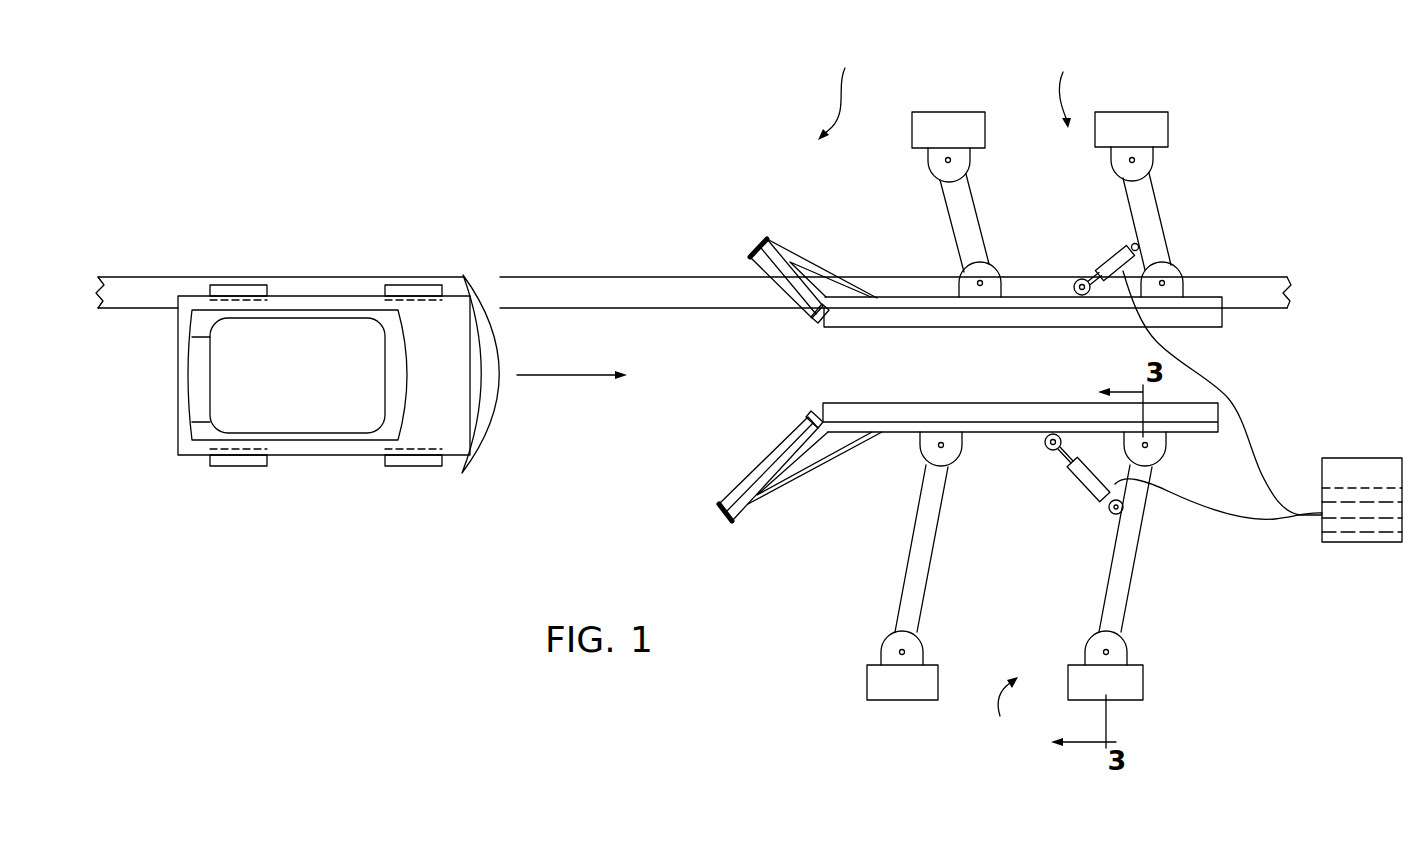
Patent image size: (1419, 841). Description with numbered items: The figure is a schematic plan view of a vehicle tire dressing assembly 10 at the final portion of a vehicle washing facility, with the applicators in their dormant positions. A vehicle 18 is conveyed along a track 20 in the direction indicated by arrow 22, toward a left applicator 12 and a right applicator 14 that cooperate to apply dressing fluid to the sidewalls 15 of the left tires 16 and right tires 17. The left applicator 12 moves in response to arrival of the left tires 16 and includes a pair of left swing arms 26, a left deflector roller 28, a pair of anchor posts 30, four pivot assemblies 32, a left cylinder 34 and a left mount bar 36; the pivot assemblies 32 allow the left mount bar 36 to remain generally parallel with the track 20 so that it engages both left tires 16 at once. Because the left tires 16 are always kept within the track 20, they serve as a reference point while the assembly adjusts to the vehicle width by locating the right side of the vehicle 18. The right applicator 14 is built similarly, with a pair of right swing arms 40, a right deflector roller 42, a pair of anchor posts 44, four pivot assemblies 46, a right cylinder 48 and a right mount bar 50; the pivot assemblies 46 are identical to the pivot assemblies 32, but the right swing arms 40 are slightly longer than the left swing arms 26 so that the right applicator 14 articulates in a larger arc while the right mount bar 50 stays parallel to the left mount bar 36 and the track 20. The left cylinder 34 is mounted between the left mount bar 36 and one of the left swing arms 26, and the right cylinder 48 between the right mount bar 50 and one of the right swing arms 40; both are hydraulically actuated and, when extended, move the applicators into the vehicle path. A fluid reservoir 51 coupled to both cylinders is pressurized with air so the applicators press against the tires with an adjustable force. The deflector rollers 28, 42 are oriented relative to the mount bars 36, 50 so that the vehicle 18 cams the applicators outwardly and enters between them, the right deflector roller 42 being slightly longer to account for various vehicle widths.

The vehicle tire dressing assembly 10 is at (840, 90).
The left applicator 12 is at (1070, 86).
The right applicator 14 is at (1002, 710).
The sidewalls 15 is at (250, 284).
The left tires 16 is at (226, 285).
The right tires 17 is at (223, 467).
The vehicle 18 is at (326, 334).
The track 20 is at (669, 278).
The arrow 22 is at (570, 376).
The left swing arms 26 is at (972, 225).
The left deflector roller 28 is at (786, 280).
The anchor posts 30 is at (968, 120).
The pivot assemblies 32 is at (951, 160).
The left cylinder 34 is at (1117, 254).
The left mount bar 36 is at (920, 300).
The right swing arms 40 is at (927, 546).
The right deflector roller 42 is at (760, 465).
The anchor posts 44 is at (898, 689).
The pivot assemblies 46 is at (944, 446).
The right cylinder 48 is at (1081, 477).
The right mount bar 50 is at (907, 432).
The fluid reservoir 51 is at (1340, 458).